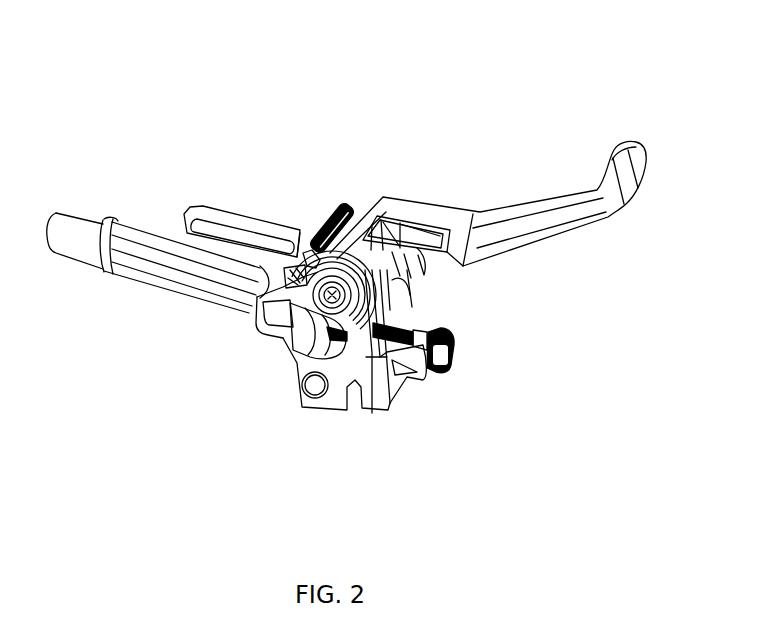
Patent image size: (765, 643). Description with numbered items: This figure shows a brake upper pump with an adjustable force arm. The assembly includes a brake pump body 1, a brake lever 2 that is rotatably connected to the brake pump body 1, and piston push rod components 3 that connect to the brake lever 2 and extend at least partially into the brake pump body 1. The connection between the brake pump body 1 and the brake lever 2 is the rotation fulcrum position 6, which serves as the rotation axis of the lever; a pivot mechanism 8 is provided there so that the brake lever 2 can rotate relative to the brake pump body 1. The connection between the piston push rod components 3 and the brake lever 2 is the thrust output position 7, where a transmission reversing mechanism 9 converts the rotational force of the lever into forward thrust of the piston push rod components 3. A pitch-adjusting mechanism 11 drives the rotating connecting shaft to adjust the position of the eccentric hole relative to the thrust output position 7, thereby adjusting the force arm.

The brake pump body 1 is at (173, 187).
The brake lever 2 is at (488, 143).
The piston push rod components 3 is at (476, 379).
The rotation fulcrum position 6 is at (259, 181).
The thrust output position 7 is at (308, 371).
The pivot mechanism 8 is at (445, 302).
The transmission reversing mechanism 9 is at (268, 449).
The pitch-adjusting mechanism 11 is at (276, 138).